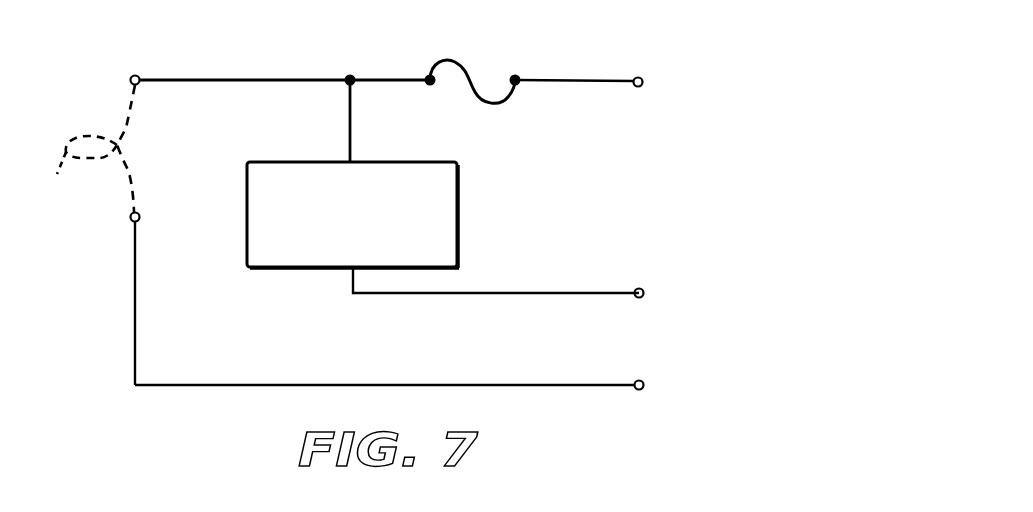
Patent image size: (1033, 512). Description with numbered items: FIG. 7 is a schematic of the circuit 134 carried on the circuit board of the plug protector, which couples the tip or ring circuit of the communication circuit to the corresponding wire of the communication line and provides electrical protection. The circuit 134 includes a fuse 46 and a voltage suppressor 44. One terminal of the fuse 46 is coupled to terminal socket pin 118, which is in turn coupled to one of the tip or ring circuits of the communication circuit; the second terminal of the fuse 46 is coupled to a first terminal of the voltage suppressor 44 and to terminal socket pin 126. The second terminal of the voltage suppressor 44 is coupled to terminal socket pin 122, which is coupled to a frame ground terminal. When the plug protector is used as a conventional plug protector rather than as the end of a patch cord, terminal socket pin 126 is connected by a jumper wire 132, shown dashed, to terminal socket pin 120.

The terminal socket pin 126 is at (139, 76).
The jumper wire 132 is at (92, 148).
The fuse 46 is at (470, 72).
The terminal socket pin 118 is at (639, 77).
The voltage suppressor 44 is at (459, 232).
The terminal socket pin 122 is at (643, 289).
The terminal socket pin 120 is at (643, 381).
The circuit 134 is at (186, 415).